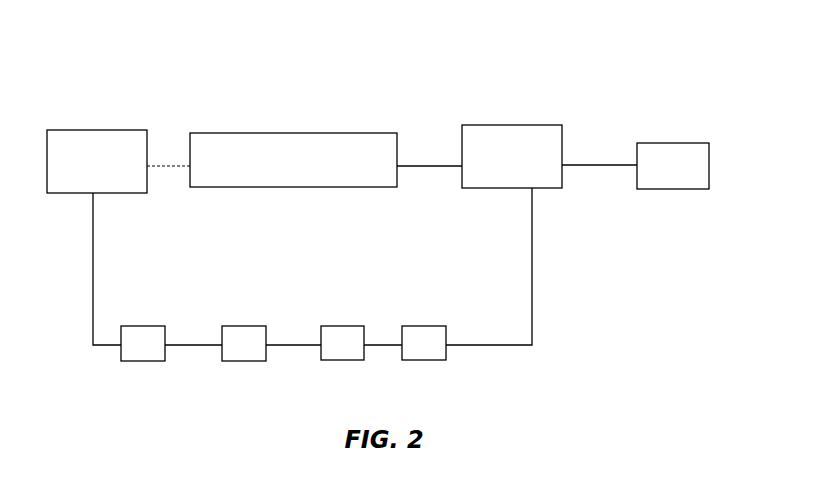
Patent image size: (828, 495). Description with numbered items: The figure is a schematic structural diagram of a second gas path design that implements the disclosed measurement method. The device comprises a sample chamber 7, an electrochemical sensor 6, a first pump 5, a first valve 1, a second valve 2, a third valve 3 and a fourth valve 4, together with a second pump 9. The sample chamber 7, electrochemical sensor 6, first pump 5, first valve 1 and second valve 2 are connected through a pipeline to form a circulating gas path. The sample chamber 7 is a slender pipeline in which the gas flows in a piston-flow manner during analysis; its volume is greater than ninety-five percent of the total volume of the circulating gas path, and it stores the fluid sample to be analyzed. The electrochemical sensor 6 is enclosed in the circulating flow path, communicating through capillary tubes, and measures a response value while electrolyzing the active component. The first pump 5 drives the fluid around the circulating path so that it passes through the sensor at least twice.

The first valve 1 is at (106, 113).
The second valve 2 is at (517, 109).
The third valve 3 is at (163, 285).
The fourth valve 4 is at (447, 284).
The first pump 5 is at (262, 287).
The electrochemical sensor 6 is at (367, 284).
The sample chamber 7 is at (293, 107).
The second pump 9 is at (677, 125).